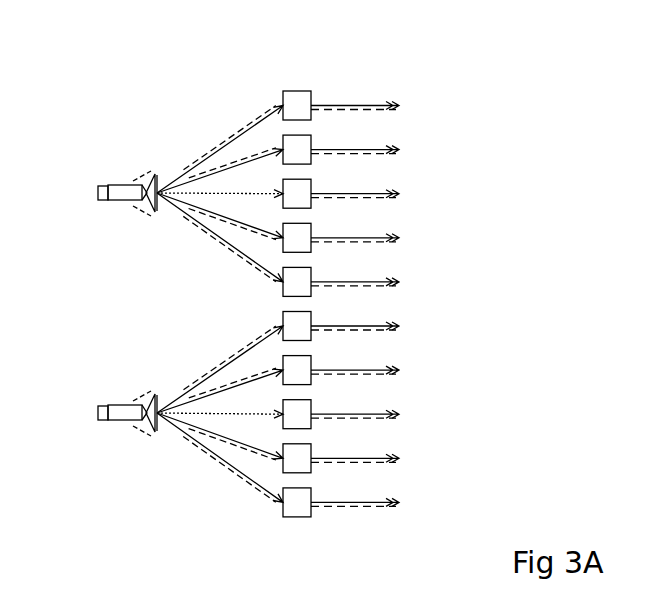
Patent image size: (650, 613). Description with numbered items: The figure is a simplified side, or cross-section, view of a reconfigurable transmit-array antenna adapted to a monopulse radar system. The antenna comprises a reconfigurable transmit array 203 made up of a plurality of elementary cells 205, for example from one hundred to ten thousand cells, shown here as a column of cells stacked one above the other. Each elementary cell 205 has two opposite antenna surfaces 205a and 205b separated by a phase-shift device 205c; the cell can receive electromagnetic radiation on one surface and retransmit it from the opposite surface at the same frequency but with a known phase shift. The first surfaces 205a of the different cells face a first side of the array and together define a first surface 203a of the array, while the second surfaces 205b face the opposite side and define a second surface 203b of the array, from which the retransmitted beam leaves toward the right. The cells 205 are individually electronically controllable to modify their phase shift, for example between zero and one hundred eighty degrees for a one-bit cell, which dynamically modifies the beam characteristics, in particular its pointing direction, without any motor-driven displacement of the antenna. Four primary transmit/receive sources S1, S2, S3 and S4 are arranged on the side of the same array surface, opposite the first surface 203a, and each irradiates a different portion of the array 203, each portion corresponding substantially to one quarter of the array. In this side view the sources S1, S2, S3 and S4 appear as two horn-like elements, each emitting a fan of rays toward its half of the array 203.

The reconfigurable transmit array 203 is at (296, 84).
The first surface of the array 203a is at (268, 95).
The second surface of the array 203b is at (338, 91).
The elementary cell 205 is at (278, 507).
The first antenna surface of the cell 205a is at (286, 518).
The second antenna surface of the cell 205b is at (355, 526).
The phase-shift device 205c is at (297, 518).
The first primary transmit/receive source S1 is at (104, 185).
The second primary transmit/receive source S2 is at (98, 193).
The third primary transmit/receive source S3 is at (98, 413).
The fourth primary transmit/receive source S4 is at (103, 405).